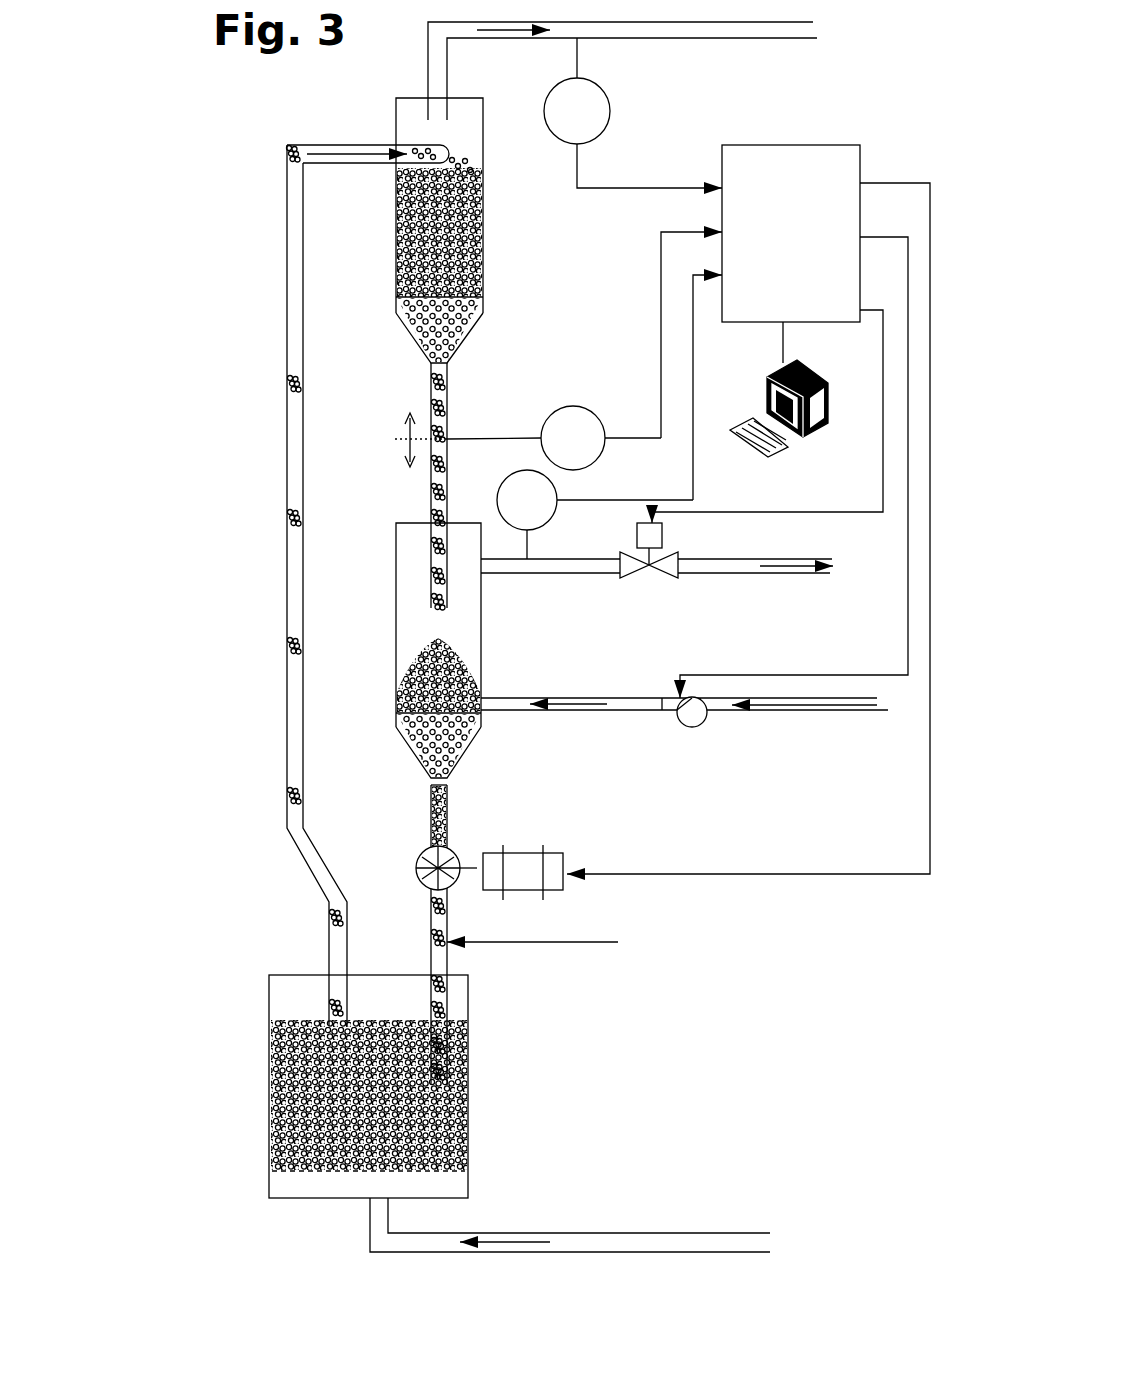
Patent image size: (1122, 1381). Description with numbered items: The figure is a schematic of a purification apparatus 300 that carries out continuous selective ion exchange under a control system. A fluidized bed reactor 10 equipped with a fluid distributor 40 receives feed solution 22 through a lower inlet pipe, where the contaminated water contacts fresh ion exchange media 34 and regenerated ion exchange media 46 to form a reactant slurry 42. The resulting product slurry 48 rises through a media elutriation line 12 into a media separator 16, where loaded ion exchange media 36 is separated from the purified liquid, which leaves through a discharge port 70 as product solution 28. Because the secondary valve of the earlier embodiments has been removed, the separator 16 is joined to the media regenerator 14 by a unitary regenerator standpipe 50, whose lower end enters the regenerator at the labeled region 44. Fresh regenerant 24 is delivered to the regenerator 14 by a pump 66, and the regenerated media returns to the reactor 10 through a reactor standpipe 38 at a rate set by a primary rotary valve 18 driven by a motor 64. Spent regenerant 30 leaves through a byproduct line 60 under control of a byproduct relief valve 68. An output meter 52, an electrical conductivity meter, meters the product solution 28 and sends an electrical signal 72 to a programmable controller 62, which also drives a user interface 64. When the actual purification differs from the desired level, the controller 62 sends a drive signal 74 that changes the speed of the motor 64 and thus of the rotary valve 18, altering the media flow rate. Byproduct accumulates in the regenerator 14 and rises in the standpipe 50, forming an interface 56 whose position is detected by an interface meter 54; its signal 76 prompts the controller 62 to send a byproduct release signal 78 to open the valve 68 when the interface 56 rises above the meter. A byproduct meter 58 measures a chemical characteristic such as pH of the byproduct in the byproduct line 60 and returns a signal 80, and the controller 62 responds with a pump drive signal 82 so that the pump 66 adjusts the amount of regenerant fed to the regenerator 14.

The purification apparatus 300 is at (148, 160).
The fluidized bed reactor 10 is at (468, 1105).
The media elutriation line 12 is at (286, 603).
The media regenerator 14 is at (483, 650).
The media separator 16 is at (485, 232).
The primary rotary valve 18 is at (456, 853).
The feed solution 22 is at (512, 1240).
The fresh regenerant 24 is at (767, 718).
The product solution 28 is at (513, 38).
The spent regenerant 30 is at (833, 575).
The fresh ion exchange media 34 is at (540, 942).
The loaded ion exchange media 36 is at (440, 333).
The reactor standpipe 38 is at (448, 1000).
The fluid distributor 40 is at (300, 1175).
The reactant slurry 42 is at (269, 1107).
The regeneration vessel inlet 44 is at (425, 547).
The regenerated ion exchange media 46 is at (430, 830).
The product slurry 48 is at (328, 157).
The regenerator standpipe 50 is at (431, 375).
The output meter 52 is at (599, 90).
The interface meter 54 is at (560, 408).
The interface 56 is at (450, 437).
The byproduct meter 58 is at (557, 498).
The byproduct line 60 is at (535, 559).
The programmable controller 62 is at (848, 316).
The motor 64 is at (808, 378).
The pump 66 is at (668, 695).
The byproduct relief valve 68 is at (663, 536).
The discharge port 70 is at (432, 96).
The electrical signal 72 is at (592, 189).
The drive signal 74 is at (735, 873).
The interface signal 76 is at (660, 295).
The byproduct release signal 78 is at (766, 511).
The byproduct chemical signal 80 is at (622, 498).
The pump drive signal 82 is at (746, 675).